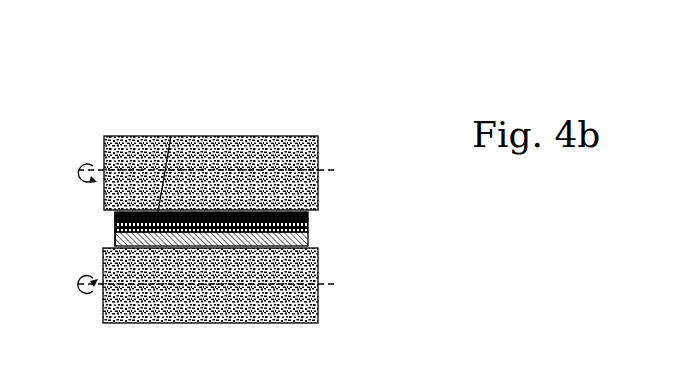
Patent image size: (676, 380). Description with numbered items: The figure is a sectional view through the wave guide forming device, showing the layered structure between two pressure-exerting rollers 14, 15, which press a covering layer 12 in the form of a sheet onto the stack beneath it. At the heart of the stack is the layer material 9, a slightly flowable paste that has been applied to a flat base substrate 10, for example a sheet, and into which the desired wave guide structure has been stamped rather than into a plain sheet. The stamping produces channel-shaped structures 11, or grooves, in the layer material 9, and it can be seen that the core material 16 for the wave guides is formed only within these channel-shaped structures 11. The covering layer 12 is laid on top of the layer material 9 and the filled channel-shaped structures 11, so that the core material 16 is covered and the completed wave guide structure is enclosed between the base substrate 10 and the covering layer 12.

The layer material 9 is at (310, 227).
The base substrate 10 is at (310, 240).
The channel-shaped structures 11 is at (115, 224).
The covering layer 12 is at (310, 214).
The pressure-exerting roller 14 is at (252, 162).
The pressure-exerting roller 15 is at (274, 295).
The core material 16 is at (171, 136).